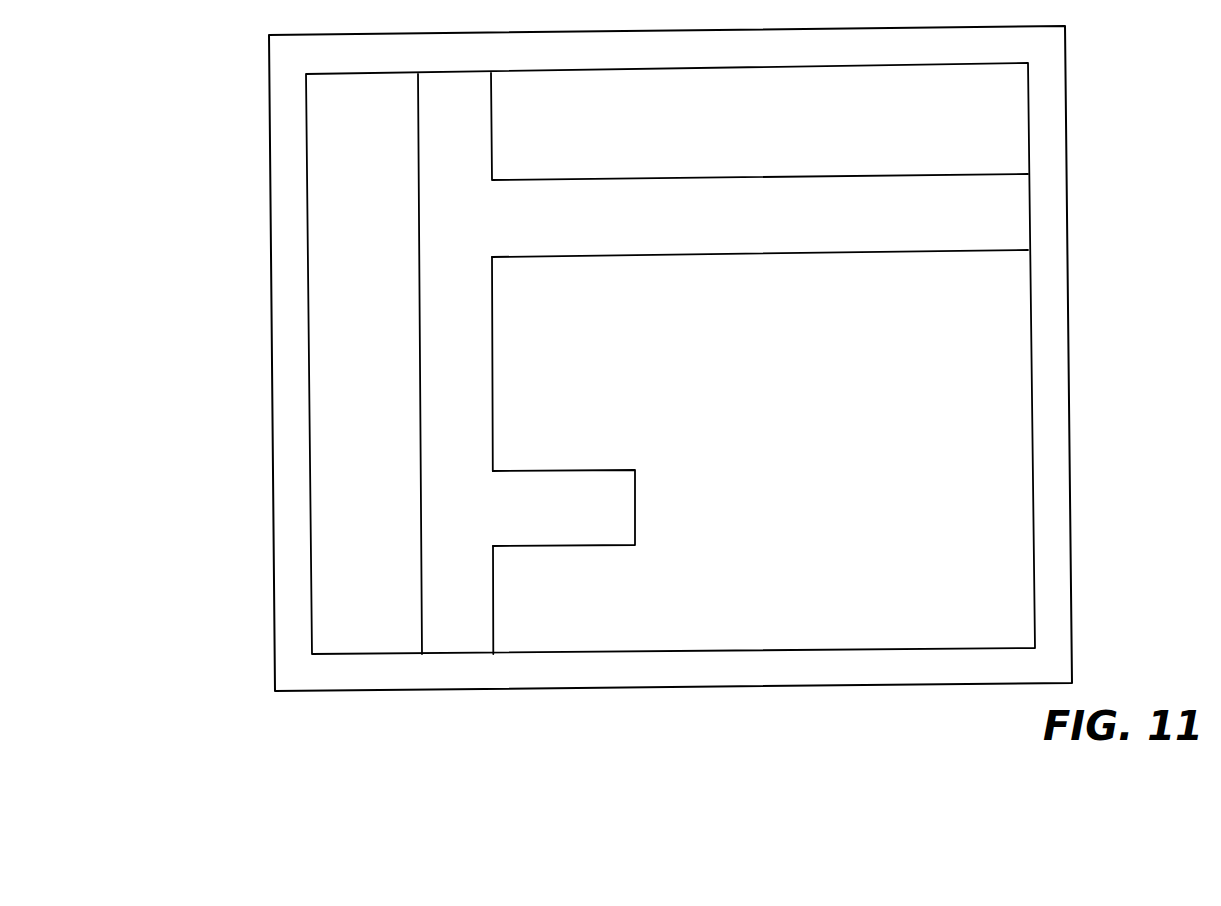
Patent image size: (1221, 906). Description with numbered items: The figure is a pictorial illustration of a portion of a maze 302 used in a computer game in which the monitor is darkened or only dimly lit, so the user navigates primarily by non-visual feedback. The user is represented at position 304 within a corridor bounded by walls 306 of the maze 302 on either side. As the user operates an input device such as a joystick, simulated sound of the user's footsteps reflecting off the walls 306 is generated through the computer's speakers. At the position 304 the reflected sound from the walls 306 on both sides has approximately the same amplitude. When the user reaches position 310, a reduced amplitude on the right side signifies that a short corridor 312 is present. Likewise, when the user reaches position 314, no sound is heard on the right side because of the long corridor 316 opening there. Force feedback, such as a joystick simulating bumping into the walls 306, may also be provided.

The maze 302 is at (790, 512).
The user position 304 is at (459, 628).
The walls of the maze 306 is at (421, 615).
The position 310 is at (453, 515).
The short corridor 312 is at (540, 470).
The position 314 is at (457, 203).
The long corridor 316 is at (612, 178).